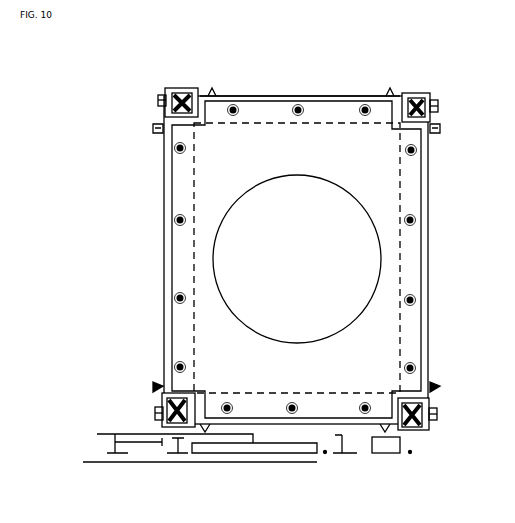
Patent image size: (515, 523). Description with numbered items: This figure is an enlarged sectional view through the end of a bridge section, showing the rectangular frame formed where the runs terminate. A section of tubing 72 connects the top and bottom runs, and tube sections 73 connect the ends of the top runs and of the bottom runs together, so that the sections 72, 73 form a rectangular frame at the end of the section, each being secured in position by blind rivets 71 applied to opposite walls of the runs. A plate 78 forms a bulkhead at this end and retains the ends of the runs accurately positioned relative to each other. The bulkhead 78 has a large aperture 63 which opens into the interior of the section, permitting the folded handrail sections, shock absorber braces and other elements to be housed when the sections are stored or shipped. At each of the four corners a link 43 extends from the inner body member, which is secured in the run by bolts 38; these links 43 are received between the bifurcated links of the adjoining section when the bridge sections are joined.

The section of tubing 72 is at (163, 272).
The tube section 73 is at (281, 96).
The plate 78 is at (373, 183).
The aperture 63 is at (320, 186).
The link 43 is at (183, 98).
The bolt 38 is at (158, 100).
The blind rivet 71 is at (153, 128).